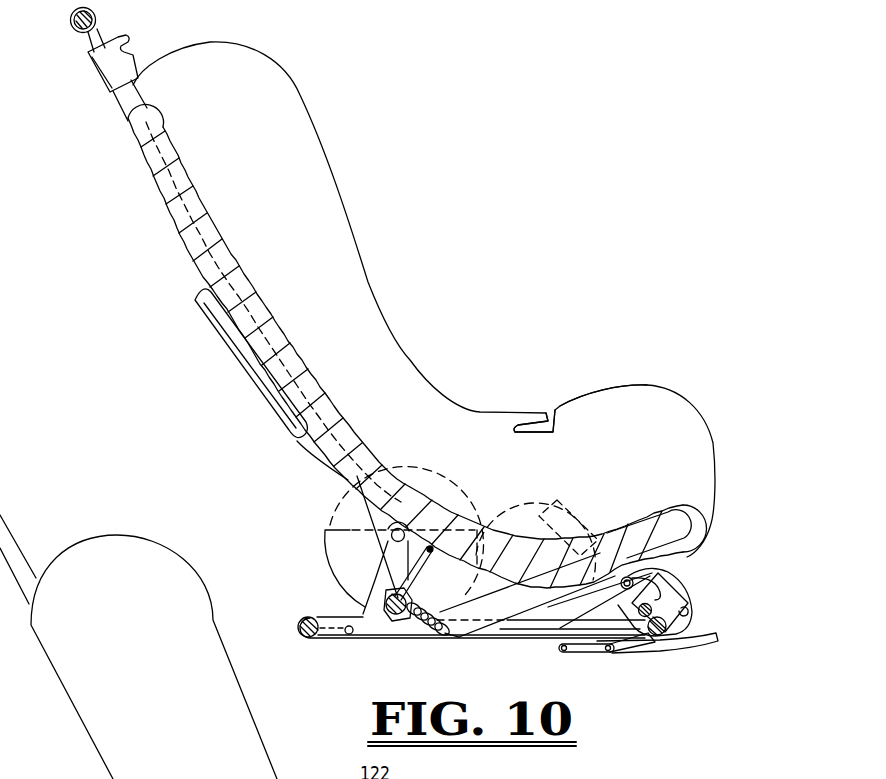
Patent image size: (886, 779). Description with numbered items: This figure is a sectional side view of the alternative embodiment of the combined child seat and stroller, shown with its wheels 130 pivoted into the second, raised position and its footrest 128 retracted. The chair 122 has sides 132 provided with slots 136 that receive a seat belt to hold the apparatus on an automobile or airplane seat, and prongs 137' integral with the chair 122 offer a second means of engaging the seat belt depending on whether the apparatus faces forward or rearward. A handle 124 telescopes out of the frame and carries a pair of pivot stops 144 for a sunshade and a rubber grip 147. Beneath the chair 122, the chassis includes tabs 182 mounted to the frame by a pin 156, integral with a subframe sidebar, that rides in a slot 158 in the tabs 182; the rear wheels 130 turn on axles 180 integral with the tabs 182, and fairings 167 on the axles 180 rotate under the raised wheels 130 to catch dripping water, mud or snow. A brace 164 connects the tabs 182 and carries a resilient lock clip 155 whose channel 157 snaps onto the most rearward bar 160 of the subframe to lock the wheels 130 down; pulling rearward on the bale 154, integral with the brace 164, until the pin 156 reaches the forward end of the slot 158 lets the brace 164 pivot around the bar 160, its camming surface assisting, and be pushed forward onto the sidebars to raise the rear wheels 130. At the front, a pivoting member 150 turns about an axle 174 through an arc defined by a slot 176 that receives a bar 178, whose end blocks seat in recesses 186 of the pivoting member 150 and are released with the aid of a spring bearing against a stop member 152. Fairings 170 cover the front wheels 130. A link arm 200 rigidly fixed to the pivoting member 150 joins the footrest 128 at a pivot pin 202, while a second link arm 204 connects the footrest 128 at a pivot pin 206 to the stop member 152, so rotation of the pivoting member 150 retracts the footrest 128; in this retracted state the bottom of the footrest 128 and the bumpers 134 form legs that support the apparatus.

The chair 122 is at (362, 182).
The rubber grip 147 is at (97, 14).
The handle 124 is at (86, 44).
The pivot stops 144 is at (95, 76).
The prongs 137' is at (259, 384).
The sides 132 is at (641, 436).
The slots 136 is at (530, 435).
The wheels 130 is at (378, 531).
The fairings 167 is at (322, 552).
The axles 180 is at (391, 536).
The tabs 182 is at (371, 583).
The slot 158 is at (338, 614).
The bumpers 134 is at (300, 622).
The most rearward bar 160 is at (302, 637).
The pin 156 is at (347, 634).
The brace 164 is at (389, 614).
The channel 157 is at (420, 626).
The lock clip 155 is at (455, 638).
The bale 154 is at (425, 556).
The fairings 170 is at (495, 597).
The recesses 186 is at (608, 590).
The bar 178 is at (637, 597).
The slot 176 is at (640, 577).
The pivoting member 150 is at (672, 582).
The stop member 152 is at (668, 630).
The axle 174 is at (653, 637).
The footrest 128 is at (697, 646).
The link arm 200 is at (628, 648).
The pivot pin 202 is at (608, 651).
The pivot pin 206 is at (562, 650).
The second link arm 204 is at (572, 636).